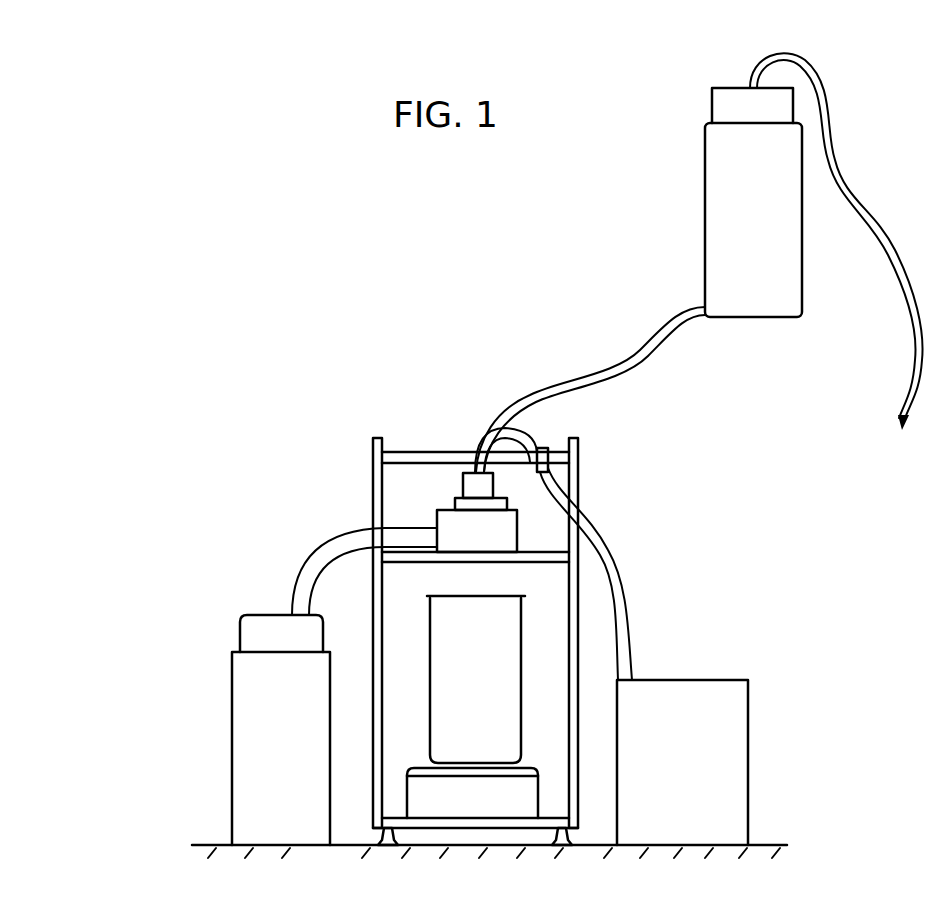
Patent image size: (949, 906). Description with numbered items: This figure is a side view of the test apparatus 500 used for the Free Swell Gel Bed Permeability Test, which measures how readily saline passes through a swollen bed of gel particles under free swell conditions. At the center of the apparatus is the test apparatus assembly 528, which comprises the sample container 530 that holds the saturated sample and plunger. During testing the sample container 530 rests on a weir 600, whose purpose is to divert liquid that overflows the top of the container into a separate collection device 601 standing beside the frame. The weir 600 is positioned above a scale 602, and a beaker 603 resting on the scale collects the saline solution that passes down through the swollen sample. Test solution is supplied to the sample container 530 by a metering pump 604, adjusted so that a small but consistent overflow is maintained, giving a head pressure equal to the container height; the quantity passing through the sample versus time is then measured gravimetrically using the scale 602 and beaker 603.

The test apparatus 500 is at (509, 272).
The test apparatus assembly 528 is at (448, 466).
The sample container 530 is at (435, 498).
The weir 600 is at (533, 525).
The separate collection device 601 is at (222, 698).
The scale 602 is at (516, 797).
The beaker 603 is at (500, 636).
The metering pump 604 is at (718, 738).